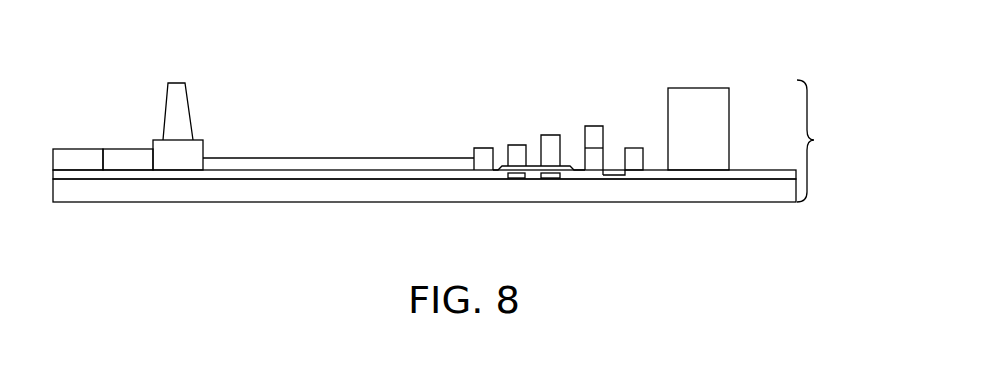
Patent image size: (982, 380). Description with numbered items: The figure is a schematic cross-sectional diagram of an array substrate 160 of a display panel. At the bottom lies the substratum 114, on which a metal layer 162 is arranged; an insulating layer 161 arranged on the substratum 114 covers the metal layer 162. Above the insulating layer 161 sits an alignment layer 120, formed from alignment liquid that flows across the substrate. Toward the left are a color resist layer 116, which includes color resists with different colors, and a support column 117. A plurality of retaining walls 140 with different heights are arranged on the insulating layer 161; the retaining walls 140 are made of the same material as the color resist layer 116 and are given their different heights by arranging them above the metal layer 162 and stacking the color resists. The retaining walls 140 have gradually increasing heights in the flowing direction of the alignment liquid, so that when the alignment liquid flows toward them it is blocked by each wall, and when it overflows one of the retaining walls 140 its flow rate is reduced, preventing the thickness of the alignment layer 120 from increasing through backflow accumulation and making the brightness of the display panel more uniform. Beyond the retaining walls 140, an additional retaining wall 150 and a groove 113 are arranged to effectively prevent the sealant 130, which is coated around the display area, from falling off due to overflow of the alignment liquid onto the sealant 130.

The groove 113 is at (624, 177).
The substratum 114 is at (383, 188).
The color resist layer 116 is at (123, 140).
The support column 117 is at (183, 105).
The alignment layer 120 is at (278, 167).
The sealant 130 is at (692, 100).
The retaining walls 140 is at (608, 128).
The additional retaining wall 150 is at (638, 155).
The array substrate 160 is at (832, 141).
The insulating layer 161 is at (397, 178).
The metal layer 162 is at (545, 177).